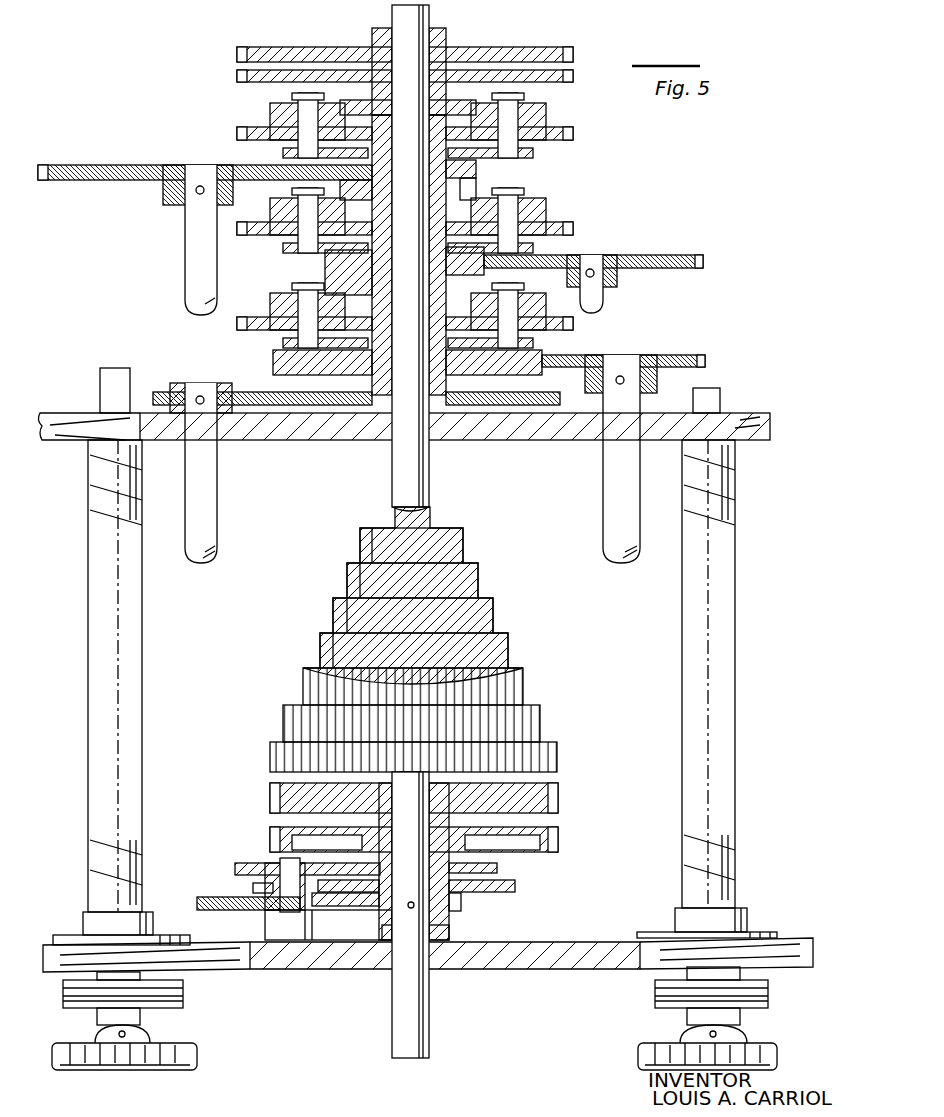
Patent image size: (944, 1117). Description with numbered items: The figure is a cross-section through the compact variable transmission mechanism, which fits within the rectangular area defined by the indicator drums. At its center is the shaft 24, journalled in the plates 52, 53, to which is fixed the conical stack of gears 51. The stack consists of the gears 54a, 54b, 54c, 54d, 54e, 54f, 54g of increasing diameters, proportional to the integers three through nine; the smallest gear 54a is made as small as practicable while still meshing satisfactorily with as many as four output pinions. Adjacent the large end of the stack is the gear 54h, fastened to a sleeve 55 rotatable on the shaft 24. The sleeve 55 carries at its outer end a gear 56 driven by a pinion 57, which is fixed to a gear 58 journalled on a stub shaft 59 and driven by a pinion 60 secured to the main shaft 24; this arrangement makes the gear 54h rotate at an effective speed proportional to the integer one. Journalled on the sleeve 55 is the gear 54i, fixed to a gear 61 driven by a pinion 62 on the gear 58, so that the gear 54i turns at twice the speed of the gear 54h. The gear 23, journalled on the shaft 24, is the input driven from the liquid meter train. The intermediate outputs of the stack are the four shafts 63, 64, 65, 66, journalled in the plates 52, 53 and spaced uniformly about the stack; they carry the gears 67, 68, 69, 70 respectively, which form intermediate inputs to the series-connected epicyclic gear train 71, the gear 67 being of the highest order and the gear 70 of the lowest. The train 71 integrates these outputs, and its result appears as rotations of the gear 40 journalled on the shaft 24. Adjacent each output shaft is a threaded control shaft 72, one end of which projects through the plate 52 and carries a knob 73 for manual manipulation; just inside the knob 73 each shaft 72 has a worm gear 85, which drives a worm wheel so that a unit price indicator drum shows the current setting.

The gear 23 is at (573, 48).
The gear 40 is at (560, 82).
The gear 70 is at (133, 165).
The epicyclic gear train 71 is at (540, 171).
The gear 69 is at (663, 255).
The shaft 66 is at (187, 283).
The shaft 65 is at (606, 297).
The gear 68 is at (665, 355).
The gear 67 is at (168, 388).
The shaft 24 is at (430, 462).
The plate 53 is at (540, 441).
The shaft 63 is at (218, 504).
The shaft 64 is at (605, 517).
The conical stack of gears 51 is at (458, 587).
The gear 54a is at (469, 541).
The gear 54b is at (346, 575).
The gear 54c is at (333, 613).
The gear 54d is at (321, 646).
The gear 54e is at (303, 684).
The gear 54f is at (284, 722).
The gear 54g is at (557, 757).
The gear 54h is at (559, 793).
The gear 54i is at (559, 837).
The threaded control shaft 72 is at (143, 672).
The sleeve 55 is at (393, 812).
The pinion 62 is at (256, 863).
The gear 61 is at (498, 868).
The pinion 57 is at (252, 886).
The gear 56 is at (500, 891).
The gear 58 is at (226, 910).
The stub shaft 59 is at (322, 922).
The pinion 60 is at (452, 900).
The plate 52 is at (428, 940).
The worm gear 85 is at (656, 996).
The knob 73 is at (766, 1045).